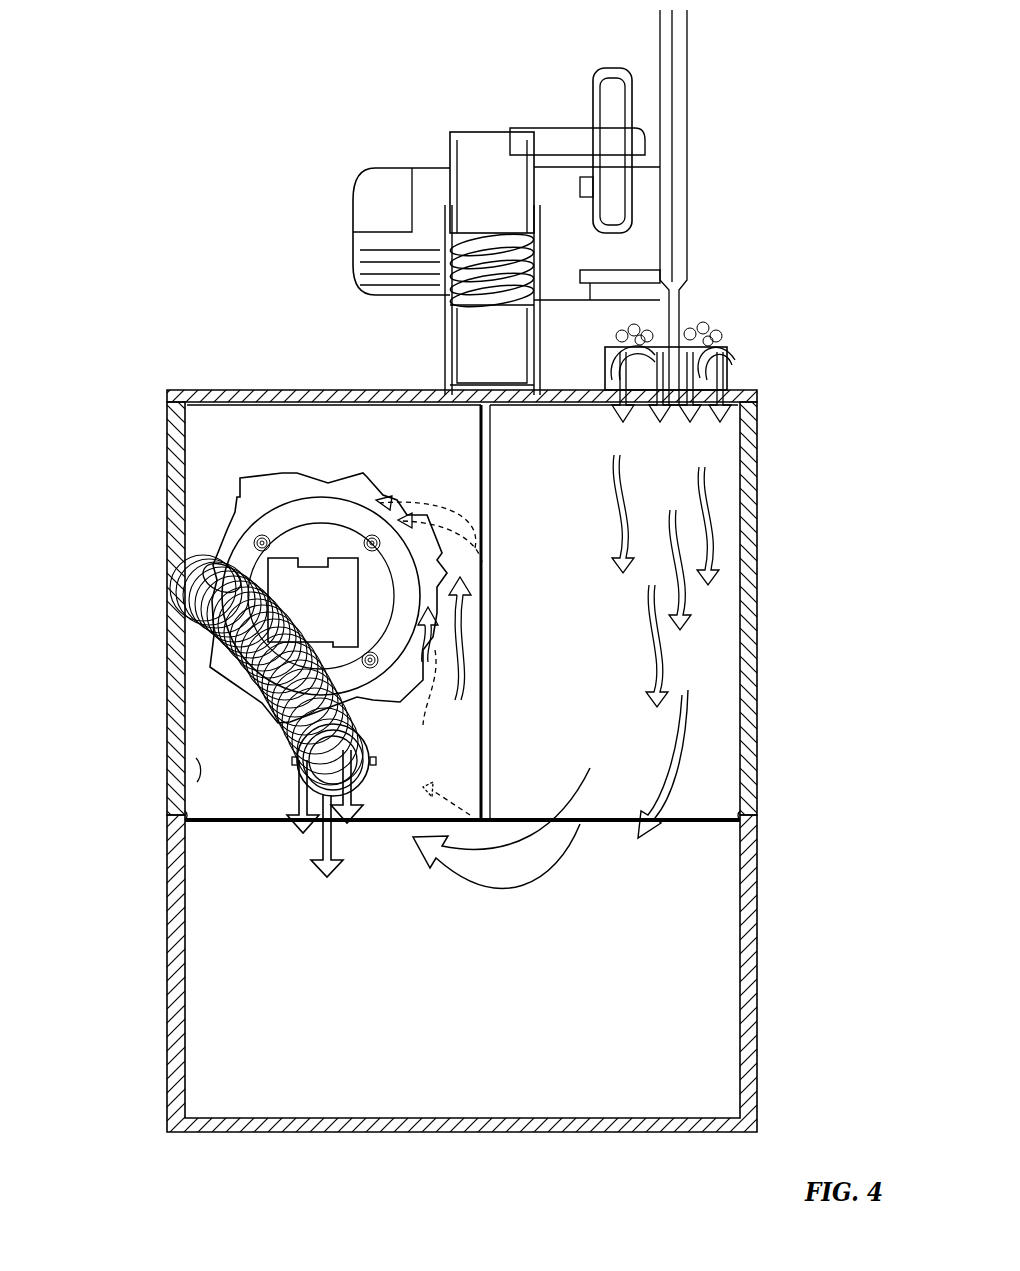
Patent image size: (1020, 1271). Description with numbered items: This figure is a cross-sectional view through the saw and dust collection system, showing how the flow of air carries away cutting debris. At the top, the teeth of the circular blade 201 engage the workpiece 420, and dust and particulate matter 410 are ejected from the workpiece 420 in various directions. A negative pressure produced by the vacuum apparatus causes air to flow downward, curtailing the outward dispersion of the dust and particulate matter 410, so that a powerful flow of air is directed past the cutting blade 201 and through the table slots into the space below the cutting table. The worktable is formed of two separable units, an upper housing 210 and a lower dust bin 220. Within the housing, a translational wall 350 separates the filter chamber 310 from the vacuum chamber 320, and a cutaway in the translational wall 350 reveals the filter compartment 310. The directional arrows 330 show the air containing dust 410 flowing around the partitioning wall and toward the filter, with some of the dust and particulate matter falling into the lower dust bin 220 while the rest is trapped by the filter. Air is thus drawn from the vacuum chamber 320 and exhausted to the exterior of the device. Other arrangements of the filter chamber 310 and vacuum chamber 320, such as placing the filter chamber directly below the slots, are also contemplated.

The circular blade 201 is at (673, 300).
The upper housing 210 is at (168, 418).
The lower dust bin 220 is at (168, 920).
The filter chamber 310 is at (227, 532).
The vacuum chamber 320 is at (196, 759).
The directional arrows 330 is at (550, 880).
The translational wall 350 is at (213, 665).
The dust and particulate matter 410 is at (705, 340).
The workpiece 420 is at (710, 370).